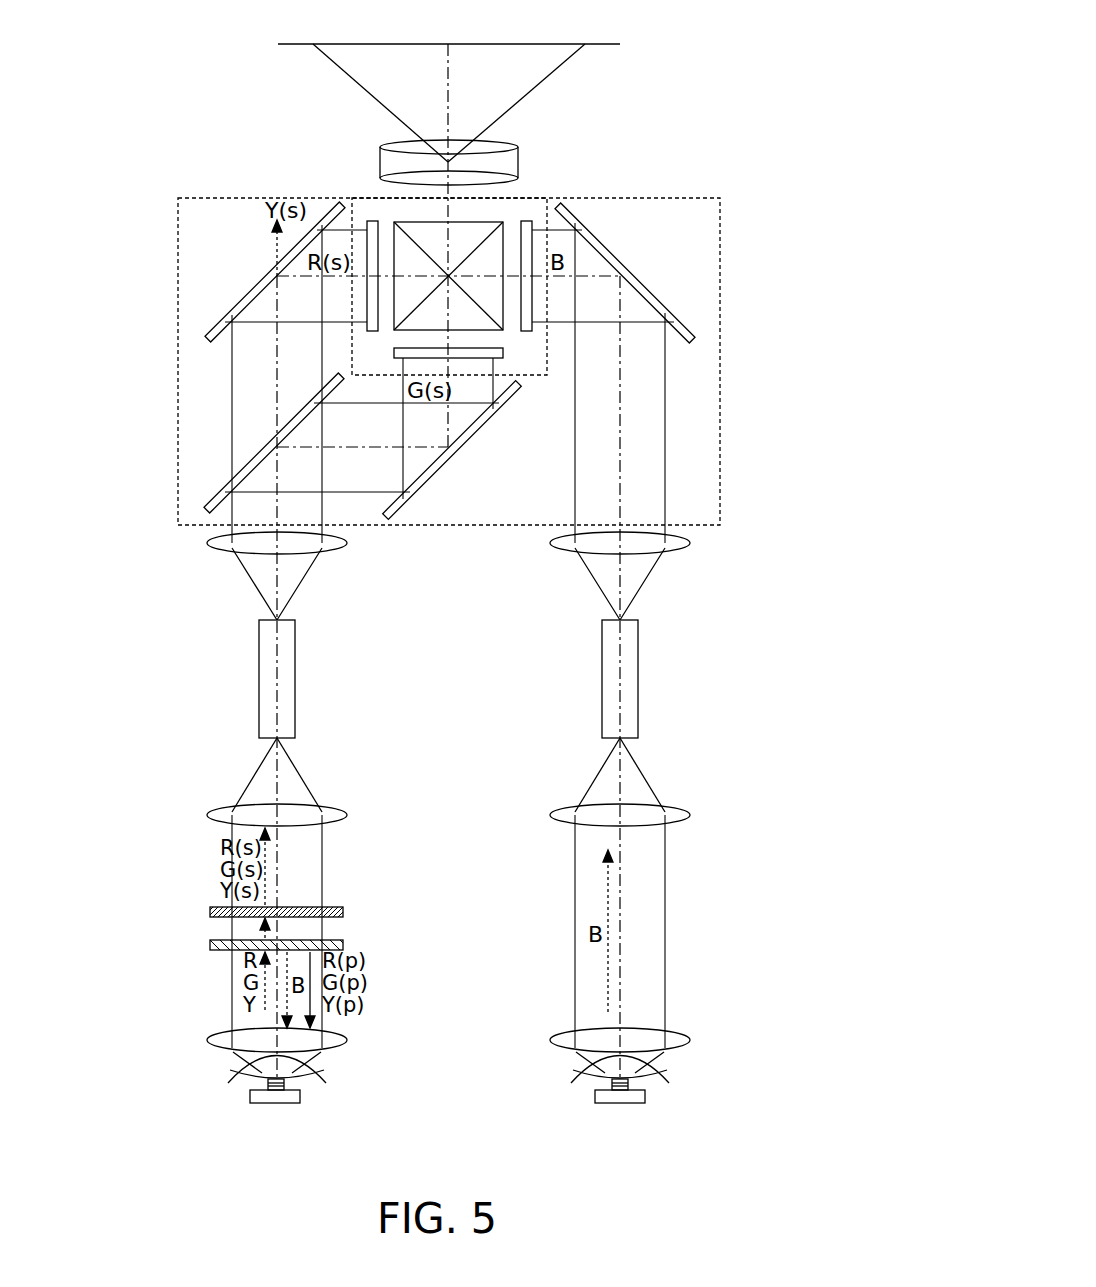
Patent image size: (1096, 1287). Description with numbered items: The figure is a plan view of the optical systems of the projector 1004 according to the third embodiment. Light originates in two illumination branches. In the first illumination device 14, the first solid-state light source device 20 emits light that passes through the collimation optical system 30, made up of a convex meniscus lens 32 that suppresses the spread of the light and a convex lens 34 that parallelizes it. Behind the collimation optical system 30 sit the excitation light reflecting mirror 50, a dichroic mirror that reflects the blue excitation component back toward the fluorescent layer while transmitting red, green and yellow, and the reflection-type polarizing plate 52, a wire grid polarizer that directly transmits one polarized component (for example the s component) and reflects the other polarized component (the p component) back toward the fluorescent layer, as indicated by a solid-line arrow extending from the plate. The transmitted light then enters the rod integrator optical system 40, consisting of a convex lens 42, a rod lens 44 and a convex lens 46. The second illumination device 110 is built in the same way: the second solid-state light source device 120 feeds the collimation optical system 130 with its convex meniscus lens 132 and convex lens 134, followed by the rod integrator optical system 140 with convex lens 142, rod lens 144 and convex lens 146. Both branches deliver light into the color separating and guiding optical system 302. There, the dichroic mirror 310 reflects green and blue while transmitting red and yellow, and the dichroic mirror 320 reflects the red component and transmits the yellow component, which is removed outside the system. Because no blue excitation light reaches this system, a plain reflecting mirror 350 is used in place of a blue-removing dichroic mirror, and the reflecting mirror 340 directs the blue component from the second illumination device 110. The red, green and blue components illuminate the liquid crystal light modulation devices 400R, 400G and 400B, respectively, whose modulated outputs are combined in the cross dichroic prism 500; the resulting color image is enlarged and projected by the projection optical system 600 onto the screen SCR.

The projector 1004 is at (798, 60).
The screen SCR is at (603, 45).
The projection optical system 600 is at (380, 162).
The cross dichroic prism 500 is at (470, 222).
The liquid crystal light modulation device 400R is at (372, 221).
The liquid crystal light modulation device 400G is at (510, 358).
The liquid crystal light modulation device 400B is at (526, 221).
The color separating and guiding optical system 302 is at (178, 370).
The dichroic mirror 310 is at (212, 496).
The dichroic mirror 320 is at (212, 325).
The reflecting mirror 340 is at (685, 327).
The reflecting mirror 350 is at (433, 478).
The first illumination device 14 is at (84, 1112).
The first solid-state light source device 20 is at (244, 1094).
The collimation optical system 30 is at (135, 985).
The convex meniscus lens 32 is at (230, 1074).
The convex lens 34 is at (213, 1040).
The rod integrator optical system 40 is at (135, 533).
The convex lens 42 is at (207, 815).
The rod lens 44 is at (259, 662).
The convex lens 46 is at (207, 543).
The excitation light reflecting mirror 50 is at (210, 945).
The reflection-type polarizing plate 52 is at (210, 912).
The second illumination device 110 is at (823, 1112).
The second solid-state light source device 120 is at (653, 1094).
The collimation optical system 130 is at (767, 985).
The convex meniscus lens 132 is at (666, 1074).
The convex lens 134 is at (683, 1040).
The rod integrator optical system 140 is at (767, 535).
The convex lens 142 is at (690, 815).
The rod lens 144 is at (638, 662).
The convex lens 146 is at (690, 543).